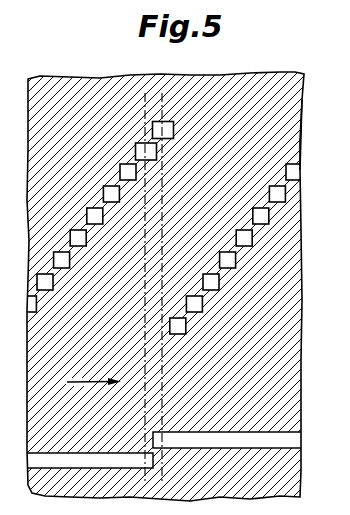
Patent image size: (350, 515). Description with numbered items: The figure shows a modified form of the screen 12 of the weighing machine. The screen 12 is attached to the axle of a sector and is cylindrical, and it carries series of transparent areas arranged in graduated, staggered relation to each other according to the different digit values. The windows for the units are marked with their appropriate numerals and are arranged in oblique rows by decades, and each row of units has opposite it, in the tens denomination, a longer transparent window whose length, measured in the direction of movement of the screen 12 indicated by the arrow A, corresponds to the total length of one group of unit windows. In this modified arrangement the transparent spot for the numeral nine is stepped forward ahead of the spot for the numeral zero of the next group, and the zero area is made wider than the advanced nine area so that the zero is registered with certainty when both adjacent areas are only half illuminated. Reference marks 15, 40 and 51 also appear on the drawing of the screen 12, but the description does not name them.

The screen 12 is at (185, 285).
The center line 15 is at (162, 193).
The side wall 40 is at (349, 117).
The transverse channel 51 is at (349, 340).